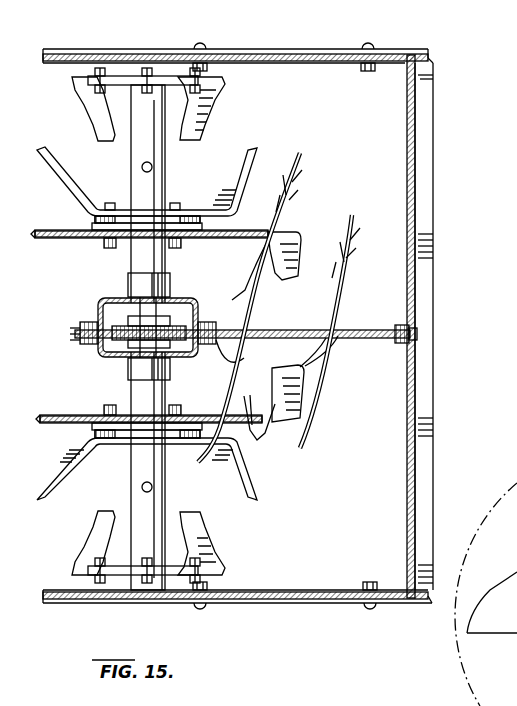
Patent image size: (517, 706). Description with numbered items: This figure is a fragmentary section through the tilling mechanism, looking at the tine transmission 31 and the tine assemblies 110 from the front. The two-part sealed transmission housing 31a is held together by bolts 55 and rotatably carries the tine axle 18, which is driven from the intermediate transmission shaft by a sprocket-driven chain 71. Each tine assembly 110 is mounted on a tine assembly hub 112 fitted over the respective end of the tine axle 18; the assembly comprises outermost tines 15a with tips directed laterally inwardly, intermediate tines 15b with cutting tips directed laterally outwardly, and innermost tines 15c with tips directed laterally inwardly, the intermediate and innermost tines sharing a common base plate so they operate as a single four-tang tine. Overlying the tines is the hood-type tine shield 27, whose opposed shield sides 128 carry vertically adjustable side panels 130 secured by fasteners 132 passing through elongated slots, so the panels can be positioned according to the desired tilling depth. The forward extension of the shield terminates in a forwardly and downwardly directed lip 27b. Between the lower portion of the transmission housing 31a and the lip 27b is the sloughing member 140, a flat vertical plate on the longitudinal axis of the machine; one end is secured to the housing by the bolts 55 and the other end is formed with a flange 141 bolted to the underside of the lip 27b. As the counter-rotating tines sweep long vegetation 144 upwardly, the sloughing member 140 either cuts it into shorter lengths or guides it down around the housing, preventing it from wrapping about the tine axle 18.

The side panel 130 is at (285, 49).
The shield side 128 is at (330, 63).
The fastener 132 is at (201, 46).
The tine shield 27 is at (435, 118).
The lip 27b is at (410, 205).
The tine assembly 110 is at (92, 136).
The outermost tine 15a is at (205, 112).
The tine assembly hub 112 is at (130, 175).
The intermediate tine 15b is at (228, 182).
The innermost tine 15c is at (268, 256).
The tine transmission 31 is at (96, 312).
The transmission housing 31a is at (122, 298).
The bolt 55 is at (80, 340).
The chain 71 is at (100, 355).
The long vegetation 144 is at (318, 332).
The sloughing member 140 is at (376, 332).
The flange 141 is at (398, 345).
The tine axle 18 is at (505, 656).